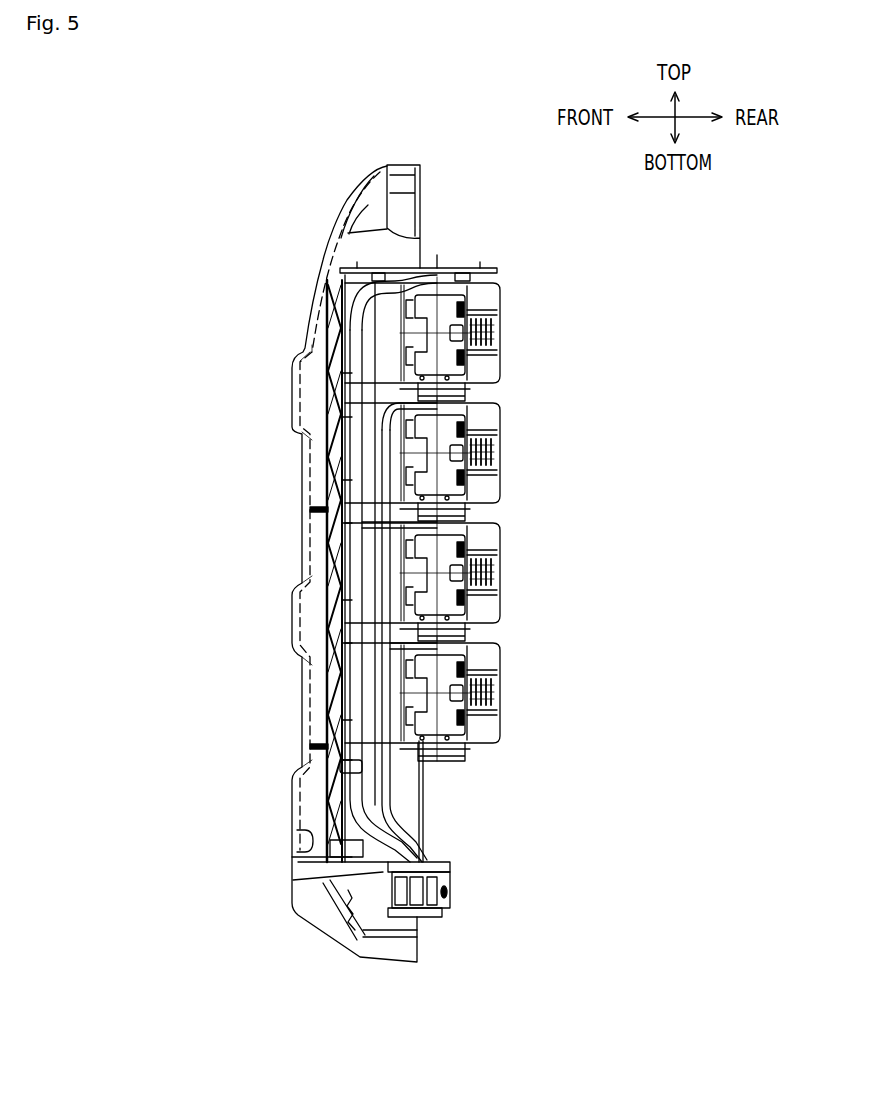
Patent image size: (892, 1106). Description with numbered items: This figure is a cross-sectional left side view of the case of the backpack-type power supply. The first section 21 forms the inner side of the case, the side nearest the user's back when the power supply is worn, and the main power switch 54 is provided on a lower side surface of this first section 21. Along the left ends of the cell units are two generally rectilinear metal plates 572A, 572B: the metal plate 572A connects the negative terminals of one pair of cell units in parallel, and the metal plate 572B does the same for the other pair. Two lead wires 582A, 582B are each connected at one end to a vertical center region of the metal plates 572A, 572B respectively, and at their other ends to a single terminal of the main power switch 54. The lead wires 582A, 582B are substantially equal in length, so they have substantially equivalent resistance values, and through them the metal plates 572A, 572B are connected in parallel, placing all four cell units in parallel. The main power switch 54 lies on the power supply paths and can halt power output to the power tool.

The first section 21 is at (323, 258).
The metal plate 572A is at (442, 325).
The lead wire 582A is at (382, 522).
The metal plate 572B is at (435, 605).
The lead wire 582B is at (390, 740).
The main power switch 54 is at (447, 875).